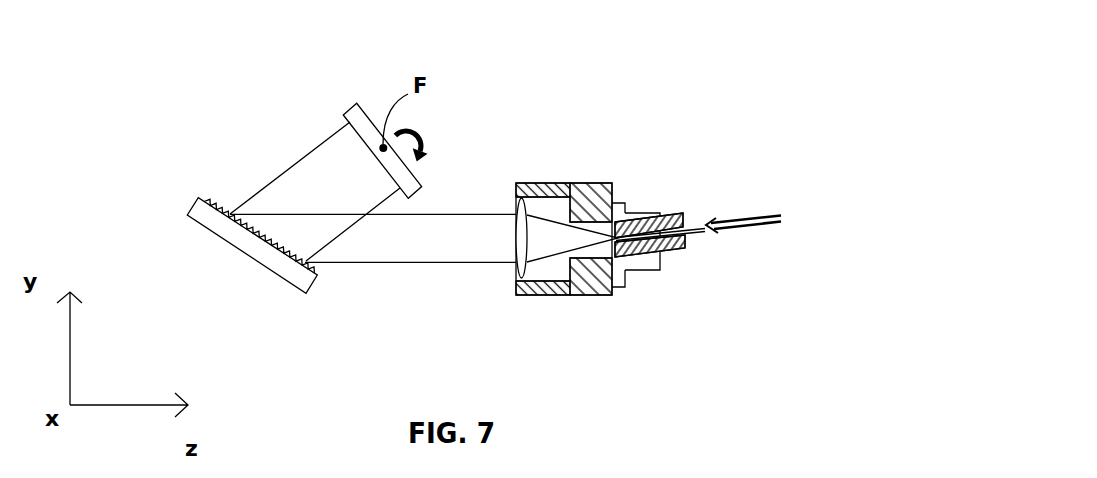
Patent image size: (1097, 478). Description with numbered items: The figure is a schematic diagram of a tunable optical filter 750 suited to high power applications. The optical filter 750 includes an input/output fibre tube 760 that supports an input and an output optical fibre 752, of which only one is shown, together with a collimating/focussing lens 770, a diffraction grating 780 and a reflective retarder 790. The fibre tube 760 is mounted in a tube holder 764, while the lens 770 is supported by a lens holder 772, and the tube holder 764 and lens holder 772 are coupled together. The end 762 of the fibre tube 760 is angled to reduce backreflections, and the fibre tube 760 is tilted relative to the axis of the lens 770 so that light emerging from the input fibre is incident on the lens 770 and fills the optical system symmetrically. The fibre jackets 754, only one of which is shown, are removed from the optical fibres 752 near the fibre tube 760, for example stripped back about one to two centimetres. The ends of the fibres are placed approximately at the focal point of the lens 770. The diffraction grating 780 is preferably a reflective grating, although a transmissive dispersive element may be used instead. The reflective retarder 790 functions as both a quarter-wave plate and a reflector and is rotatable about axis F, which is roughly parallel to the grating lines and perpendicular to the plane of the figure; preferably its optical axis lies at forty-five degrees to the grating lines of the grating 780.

The optical filter 750 is at (543, 111).
The input and output optical fibre 752 is at (688, 224).
The fibre jacket 754 is at (766, 214).
The input/output fibre tube 760 is at (668, 255).
The end of the fibre tube 762 is at (598, 262).
The tube holder 764 is at (637, 288).
The collimating/focussing lens 770 is at (517, 268).
The lens holder 772 is at (582, 180).
The diffraction grating 780 is at (293, 282).
The reflective retarder 790 is at (347, 105).